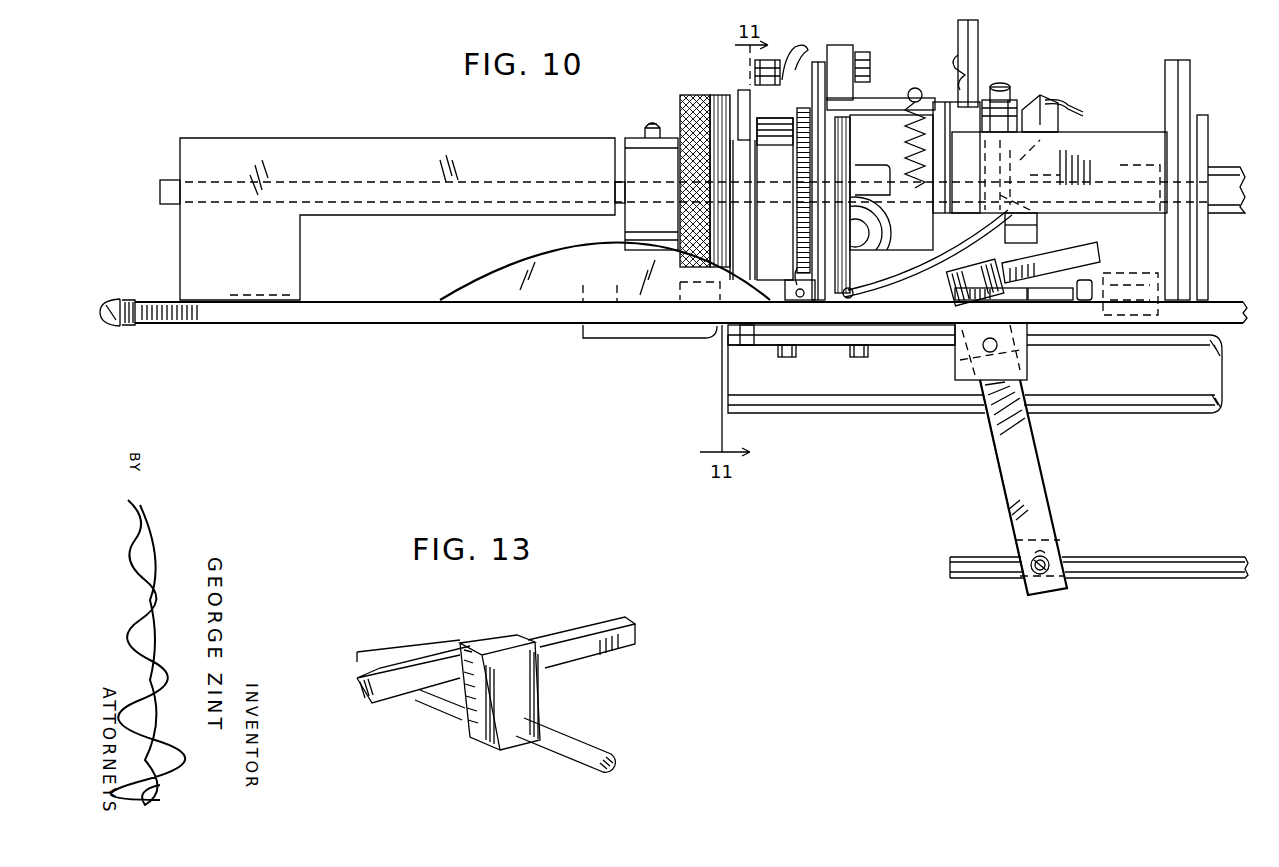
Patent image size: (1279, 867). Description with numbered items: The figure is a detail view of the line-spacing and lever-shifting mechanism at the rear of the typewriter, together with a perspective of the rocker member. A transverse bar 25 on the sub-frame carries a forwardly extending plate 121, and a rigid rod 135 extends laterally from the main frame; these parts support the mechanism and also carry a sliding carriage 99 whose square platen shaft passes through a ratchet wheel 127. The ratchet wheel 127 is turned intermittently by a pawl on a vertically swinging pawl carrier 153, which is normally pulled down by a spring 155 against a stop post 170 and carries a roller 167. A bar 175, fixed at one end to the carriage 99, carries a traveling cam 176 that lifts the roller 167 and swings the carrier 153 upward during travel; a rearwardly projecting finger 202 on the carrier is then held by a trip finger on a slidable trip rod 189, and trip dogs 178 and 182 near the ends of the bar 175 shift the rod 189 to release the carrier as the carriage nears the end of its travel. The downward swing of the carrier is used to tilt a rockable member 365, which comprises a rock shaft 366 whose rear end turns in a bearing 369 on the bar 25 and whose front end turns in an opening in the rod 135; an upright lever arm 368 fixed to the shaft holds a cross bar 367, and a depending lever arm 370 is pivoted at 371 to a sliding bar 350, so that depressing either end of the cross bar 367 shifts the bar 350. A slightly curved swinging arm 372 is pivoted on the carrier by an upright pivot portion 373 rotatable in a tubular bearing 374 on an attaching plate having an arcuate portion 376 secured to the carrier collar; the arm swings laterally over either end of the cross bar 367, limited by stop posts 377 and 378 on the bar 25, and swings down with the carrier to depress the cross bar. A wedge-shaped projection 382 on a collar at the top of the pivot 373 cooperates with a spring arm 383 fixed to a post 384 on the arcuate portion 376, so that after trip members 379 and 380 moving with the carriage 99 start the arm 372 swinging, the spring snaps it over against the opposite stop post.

In FIG. 10, the transverse bar 25 is at (1238, 300).
In FIG. 10, the sliding carriage 99 is at (1200, 140).
In FIG. 10, the plate 121 is at (848, 338).
In FIG. 10, the ratchet wheel 127 is at (798, 187).
In FIG. 10, the rigid rod 135 is at (1135, 400).
In FIG. 10, the pawl carrier 153 is at (878, 100).
In FIG. 10, the spring 155 is at (905, 150).
In FIG. 10, the roller 167 is at (798, 220).
In FIG. 10, the stop post 170 is at (855, 190).
In FIG. 10, the bar 175 is at (410, 319).
In FIG. 10, the traveling cam 176 is at (510, 265).
In FIG. 10, the trip dog 178 is at (165, 300).
In FIG. 10, the trip dog 182 is at (1100, 292).
In FIG. 10, the slidable trip rod 189 is at (581, 337).
In FIG. 10, the finger 202 is at (1037, 230).
In FIG. 10, the sliding bar 350 is at (1162, 565).
In FIG. 10, the rockable member 365 is at (1100, 242).
In FIG. 13, the rockable member 365 is at (505, 622).
In FIG. 10, the rock shaft 366 is at (988, 352).
In FIG. 13, the rock shaft 366 is at (575, 745).
In FIG. 10, the cross bar 367 is at (1101, 254).
In FIG. 13, the cross bar 367 is at (610, 628).
In FIG. 10, the upright lever arm 368 is at (965, 358).
In FIG. 13, the upright lever arm 368 is at (560, 703).
In FIG. 10, the bearing 369 is at (1010, 372).
In FIG. 10, the depending lever arm 370 is at (1035, 498).
In FIG. 10, the pivot 371 is at (1033, 575).
In FIG. 10, the swinging arm 372 is at (900, 262).
In FIG. 10, the upright pivot portion 373 is at (1011, 84).
In FIG. 10, the tubular bearing 374 is at (1040, 168).
In FIG. 10, the arcuate portion 376 is at (950, 110).
In FIG. 10, the stop post 377 is at (820, 75).
In FIG. 10, the stop post 378 is at (1190, 82).
In FIG. 10, the trip member 379 is at (398, 150).
In FIG. 10, the trip member 380 is at (1120, 140).
In FIG. 10, the wedge-shaped projection 382 is at (1040, 102).
In FIG. 10, the spring arm 383 is at (1082, 108).
In FIG. 10, the post 384 is at (960, 36).